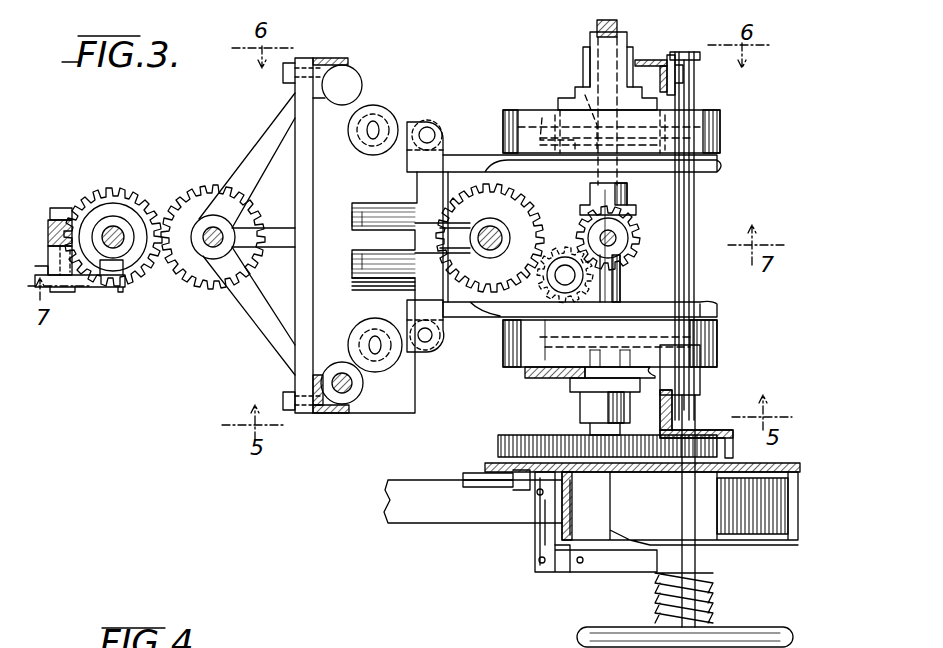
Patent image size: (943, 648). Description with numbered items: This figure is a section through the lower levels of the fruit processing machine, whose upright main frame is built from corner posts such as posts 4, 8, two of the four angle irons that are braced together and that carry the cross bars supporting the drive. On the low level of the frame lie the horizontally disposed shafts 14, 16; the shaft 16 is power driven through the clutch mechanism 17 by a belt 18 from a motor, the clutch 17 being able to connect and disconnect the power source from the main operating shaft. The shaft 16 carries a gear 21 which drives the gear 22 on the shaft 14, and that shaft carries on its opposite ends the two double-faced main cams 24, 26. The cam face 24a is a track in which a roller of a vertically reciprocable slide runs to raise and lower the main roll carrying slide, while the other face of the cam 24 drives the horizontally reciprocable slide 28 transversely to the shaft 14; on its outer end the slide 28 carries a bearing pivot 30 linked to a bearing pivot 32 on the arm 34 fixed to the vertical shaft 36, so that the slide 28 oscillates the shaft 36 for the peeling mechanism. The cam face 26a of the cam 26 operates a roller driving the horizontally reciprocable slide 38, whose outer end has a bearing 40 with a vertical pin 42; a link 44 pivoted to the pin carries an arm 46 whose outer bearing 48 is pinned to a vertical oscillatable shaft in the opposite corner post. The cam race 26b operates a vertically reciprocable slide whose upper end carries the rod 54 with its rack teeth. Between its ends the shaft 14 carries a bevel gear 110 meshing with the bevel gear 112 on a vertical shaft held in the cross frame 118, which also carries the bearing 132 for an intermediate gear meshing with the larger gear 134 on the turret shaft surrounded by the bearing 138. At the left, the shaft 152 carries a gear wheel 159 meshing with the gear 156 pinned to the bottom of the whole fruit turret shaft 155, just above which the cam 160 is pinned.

The corner post 4 is at (580, 408).
The corner post 8 is at (645, 63).
The horizontal shaft 14 is at (622, 283).
The horizontal shaft 16 is at (694, 193).
The clutch mechanism 17 is at (535, 546).
The belt 18 is at (406, 486).
The gear 21 is at (705, 440).
The gear 22 is at (498, 446).
The main cam 24 is at (515, 352).
The cam face 24a is at (525, 373).
The main cam 26 is at (504, 120).
The cam face 26a is at (542, 118).
The cam race 26b is at (585, 95).
The horizontally reciprocable slide 28 is at (648, 306).
The bearing pivot 30 is at (415, 325).
The bearing pivot 32 is at (380, 352).
The arm 34 is at (352, 352).
The vertical shaft 36 is at (355, 388).
The horizontally reciprocable slide 38 is at (466, 155).
The bearing 40 is at (437, 120).
The vertical pin 42 is at (441, 128).
The link 44 is at (390, 124).
The arm 46 is at (384, 110).
The outer bearing 48 is at (358, 76).
The rod 54 is at (617, 30).
The bevel gear 110 is at (620, 212).
The bevel gear 112 is at (636, 238).
The cross frame 118 is at (462, 228).
The bearing 132 is at (545, 278).
The gear 134 is at (440, 280).
The bearing 138 is at (500, 228).
The shaft 152 is at (232, 226).
The whole fruit turret shaft 155 is at (122, 232).
The gear 156 is at (136, 282).
The gear wheel 159 is at (203, 275).
The cam 160 is at (113, 205).